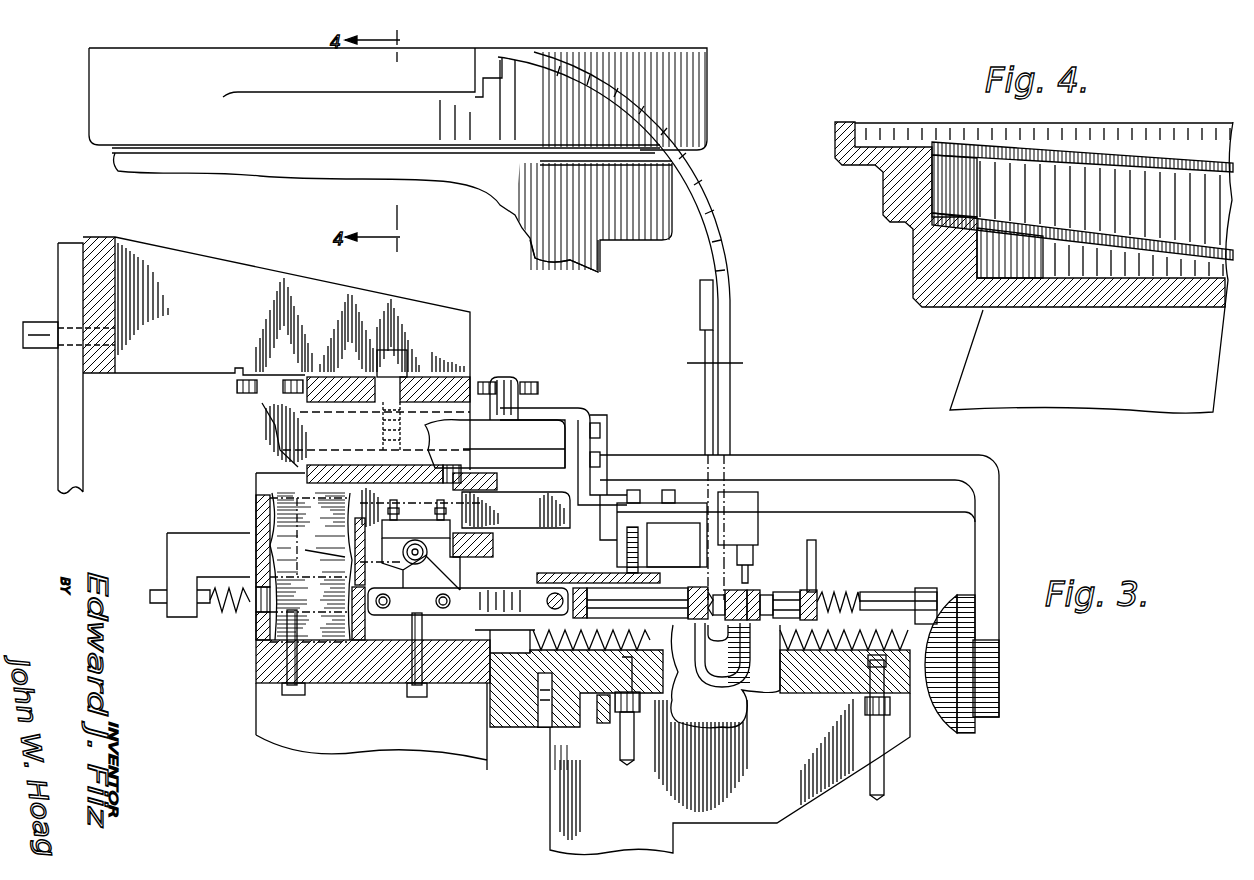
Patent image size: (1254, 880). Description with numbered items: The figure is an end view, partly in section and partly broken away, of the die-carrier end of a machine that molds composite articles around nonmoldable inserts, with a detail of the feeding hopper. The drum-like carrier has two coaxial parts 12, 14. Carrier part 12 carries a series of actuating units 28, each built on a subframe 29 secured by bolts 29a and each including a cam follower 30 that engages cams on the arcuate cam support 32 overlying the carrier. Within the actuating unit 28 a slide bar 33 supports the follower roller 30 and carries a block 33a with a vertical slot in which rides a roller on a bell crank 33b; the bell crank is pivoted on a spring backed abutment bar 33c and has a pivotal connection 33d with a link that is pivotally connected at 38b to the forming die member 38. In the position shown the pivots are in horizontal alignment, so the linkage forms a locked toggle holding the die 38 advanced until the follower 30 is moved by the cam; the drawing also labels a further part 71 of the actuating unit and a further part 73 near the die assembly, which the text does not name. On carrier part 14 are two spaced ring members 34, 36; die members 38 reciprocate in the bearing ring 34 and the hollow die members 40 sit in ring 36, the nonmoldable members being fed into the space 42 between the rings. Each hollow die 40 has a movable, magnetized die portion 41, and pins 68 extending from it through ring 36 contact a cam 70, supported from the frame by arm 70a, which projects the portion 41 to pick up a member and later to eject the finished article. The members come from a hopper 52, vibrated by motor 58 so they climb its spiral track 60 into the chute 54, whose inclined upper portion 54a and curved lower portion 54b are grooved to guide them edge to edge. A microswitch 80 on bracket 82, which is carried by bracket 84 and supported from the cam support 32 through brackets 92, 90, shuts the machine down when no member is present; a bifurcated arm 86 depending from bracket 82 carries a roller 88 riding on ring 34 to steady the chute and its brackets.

In FIG. 3, the carrier part 12 is at (595, 566).
In FIG. 3, the carrier part 14 is at (955, 572).
In FIG. 3, the actuating unit 28 is at (520, 490).
In FIG. 3, the subframe 29 is at (267, 686).
In FIG. 3, the bolts 29a is at (417, 695).
In FIG. 3, the cam follower 30 is at (423, 440).
In FIG. 3, the cam support 32 is at (208, 262).
In FIG. 3, the slide bar 33 is at (485, 528).
In FIG. 3, the block 33a is at (447, 594).
In FIG. 3, the bell crank 33b is at (590, 616).
In FIG. 3, the abutment bar 33c is at (357, 684).
In FIG. 3, the pivotal connection 33d is at (443, 687).
In FIG. 3, the ring member 34 is at (575, 572).
In FIG. 3, the ring member 36 is at (857, 580).
In FIG. 3, the forming die member 38 is at (717, 671).
In FIG. 3, the pivotal connection 38b is at (575, 695).
In FIG. 3, the forming die member 40 is at (810, 587).
In FIG. 3, the die portion 41 is at (775, 590).
In FIG. 3, the space 42 is at (757, 667).
In FIG. 3, the hopper 52 is at (708, 78).
In FIG. 4, the hopper 52 is at (1183, 125).
In FIG. 3, the chute 54 is at (745, 300).
In FIG. 3, the upper chute portion 54a is at (705, 212).
In FIG. 3, the lower chute portion 54b is at (718, 727).
In FIG. 3, the motor 58 is at (597, 268).
In FIG. 4, the motor 58 is at (1163, 400).
In FIG. 4, the spiral track 60 is at (1153, 238).
In FIG. 3, the pins 68 is at (918, 597).
In FIG. 3, the cam 70 is at (923, 688).
In FIG. 3, the arm 70a is at (990, 497).
In FIG. 3, the plate 71 is at (328, 468).
In FIG. 3, the spring 73 is at (815, 593).
In FIG. 3, the microswitch 80 is at (760, 503).
In FIG. 3, the bracket 82 is at (708, 570).
In FIG. 3, the bracket 84 is at (658, 503).
In FIG. 3, the bifurcated arm 86 is at (635, 500).
In FIG. 3, the roller 88 is at (640, 538).
In FIG. 3, the bracket 90 is at (628, 522).
In FIG. 3, the bracket 92 is at (542, 407).